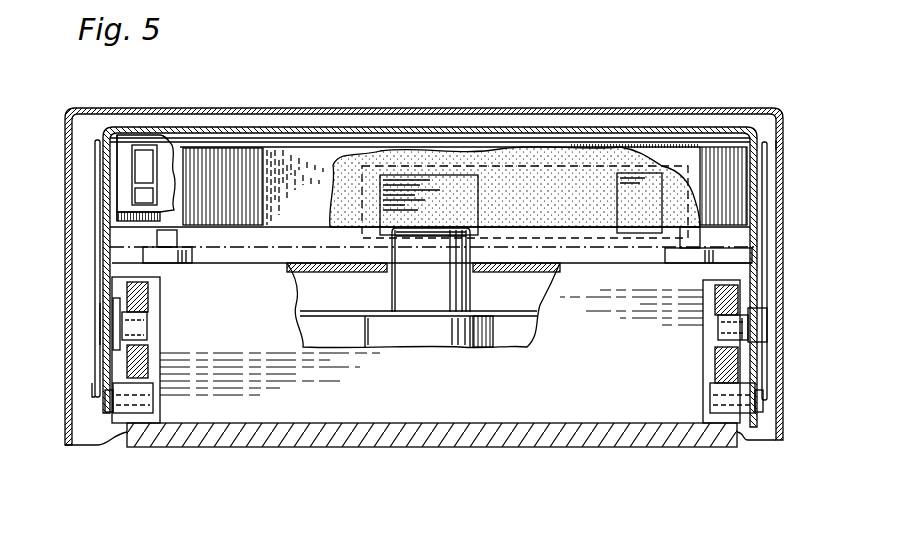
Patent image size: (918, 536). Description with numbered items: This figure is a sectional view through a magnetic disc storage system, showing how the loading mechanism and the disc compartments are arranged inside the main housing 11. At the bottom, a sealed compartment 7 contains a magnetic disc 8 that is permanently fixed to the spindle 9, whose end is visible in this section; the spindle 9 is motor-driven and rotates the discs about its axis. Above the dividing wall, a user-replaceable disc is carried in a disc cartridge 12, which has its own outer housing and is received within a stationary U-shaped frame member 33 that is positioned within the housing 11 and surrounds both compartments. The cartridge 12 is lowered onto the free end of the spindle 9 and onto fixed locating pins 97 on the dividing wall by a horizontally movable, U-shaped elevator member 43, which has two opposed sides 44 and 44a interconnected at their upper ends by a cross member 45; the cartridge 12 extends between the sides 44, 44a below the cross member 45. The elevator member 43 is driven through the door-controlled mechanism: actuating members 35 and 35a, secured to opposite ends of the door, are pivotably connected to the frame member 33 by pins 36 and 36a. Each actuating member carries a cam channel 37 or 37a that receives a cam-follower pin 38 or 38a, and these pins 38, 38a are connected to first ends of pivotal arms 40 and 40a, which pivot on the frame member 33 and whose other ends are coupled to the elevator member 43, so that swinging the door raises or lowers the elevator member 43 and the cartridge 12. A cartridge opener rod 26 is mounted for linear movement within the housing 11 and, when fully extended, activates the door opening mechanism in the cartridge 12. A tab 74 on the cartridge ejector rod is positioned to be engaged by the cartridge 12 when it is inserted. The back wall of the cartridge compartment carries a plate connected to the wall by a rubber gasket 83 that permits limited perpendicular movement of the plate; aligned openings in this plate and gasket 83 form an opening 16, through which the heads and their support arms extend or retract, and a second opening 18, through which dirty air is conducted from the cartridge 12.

The sealed compartment 7 is at (327, 327).
The magnetic disc 8 is at (515, 313).
The spindle 9 is at (402, 285).
The main housing 11 is at (783, 300).
The disc cartridge 12 is at (722, 152).
The opening 16 is at (388, 183).
The second opening 18 is at (637, 183).
The cartridge opener rod 26 is at (137, 195).
The u-shaped frame member 33 is at (290, 128).
The actuating member 35 is at (142, 352).
The actuating member 35a is at (722, 365).
The pin 36 is at (115, 407).
The pin 36a is at (748, 397).
The second cam channel 37 is at (147, 320).
The cam channel 37a is at (720, 340).
The pin 38 is at (130, 323).
The pin 38a is at (735, 323).
The pivotal arm 40 is at (147, 292).
The pivotal arm 40a is at (740, 298).
The elevator member 43 is at (771, 140).
The side 44 is at (96, 150).
The side 44a is at (767, 168).
The cross member 45 is at (457, 138).
The tab 74 is at (141, 160).
The rubber gasket 83 is at (515, 192).
The fixed locating pins 97 is at (177, 237).